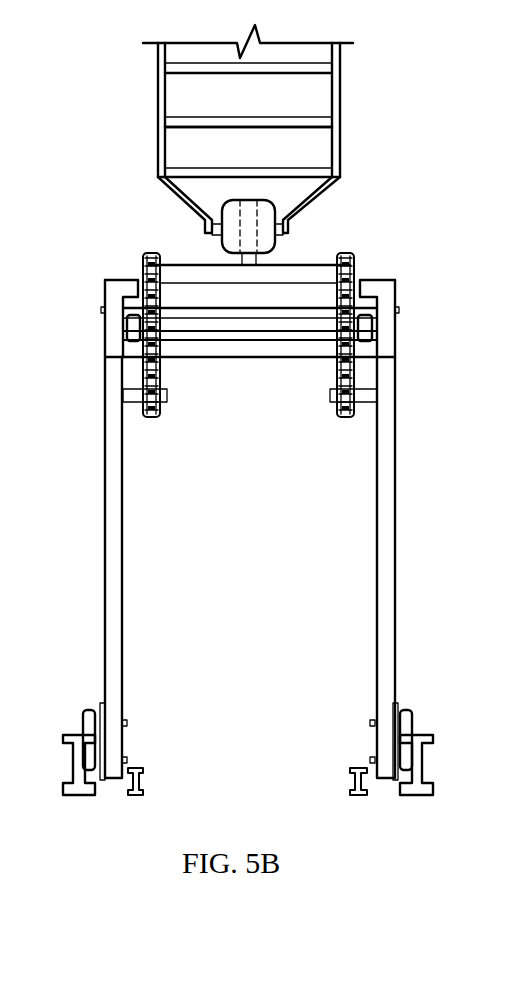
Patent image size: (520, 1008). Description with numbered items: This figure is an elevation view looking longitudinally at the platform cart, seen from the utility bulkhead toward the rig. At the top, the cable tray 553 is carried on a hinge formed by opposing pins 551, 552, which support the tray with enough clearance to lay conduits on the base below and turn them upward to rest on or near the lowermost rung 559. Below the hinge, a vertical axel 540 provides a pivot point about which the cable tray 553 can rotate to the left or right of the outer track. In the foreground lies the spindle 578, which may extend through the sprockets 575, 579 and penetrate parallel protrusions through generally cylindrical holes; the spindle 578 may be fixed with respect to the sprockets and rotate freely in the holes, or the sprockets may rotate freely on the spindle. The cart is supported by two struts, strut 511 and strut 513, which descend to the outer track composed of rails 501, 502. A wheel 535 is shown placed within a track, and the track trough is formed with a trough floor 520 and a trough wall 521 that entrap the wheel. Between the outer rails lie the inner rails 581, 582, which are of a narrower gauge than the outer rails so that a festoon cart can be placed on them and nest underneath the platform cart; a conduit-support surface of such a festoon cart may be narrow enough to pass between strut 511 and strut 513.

The cable tray 553 is at (340, 100).
The lowermost rung 559 is at (310, 126).
The vertical axel 540 is at (247, 200).
The pin 552 is at (203, 228).
The pin 551 is at (293, 228).
The sprocket 579 is at (144, 262).
The sprocket 575 is at (353, 265).
The spindle 578 is at (399, 311).
The wheel 535 is at (122, 328).
The trough wall 521 is at (377, 335).
The trough floor 520 is at (264, 335).
The strut 513 is at (105, 557).
The strut 511 is at (395, 558).
The rail 502 is at (83, 797).
The rail 501 is at (420, 797).
The inner rail 581 is at (137, 797).
The inner rail 582 is at (360, 797).